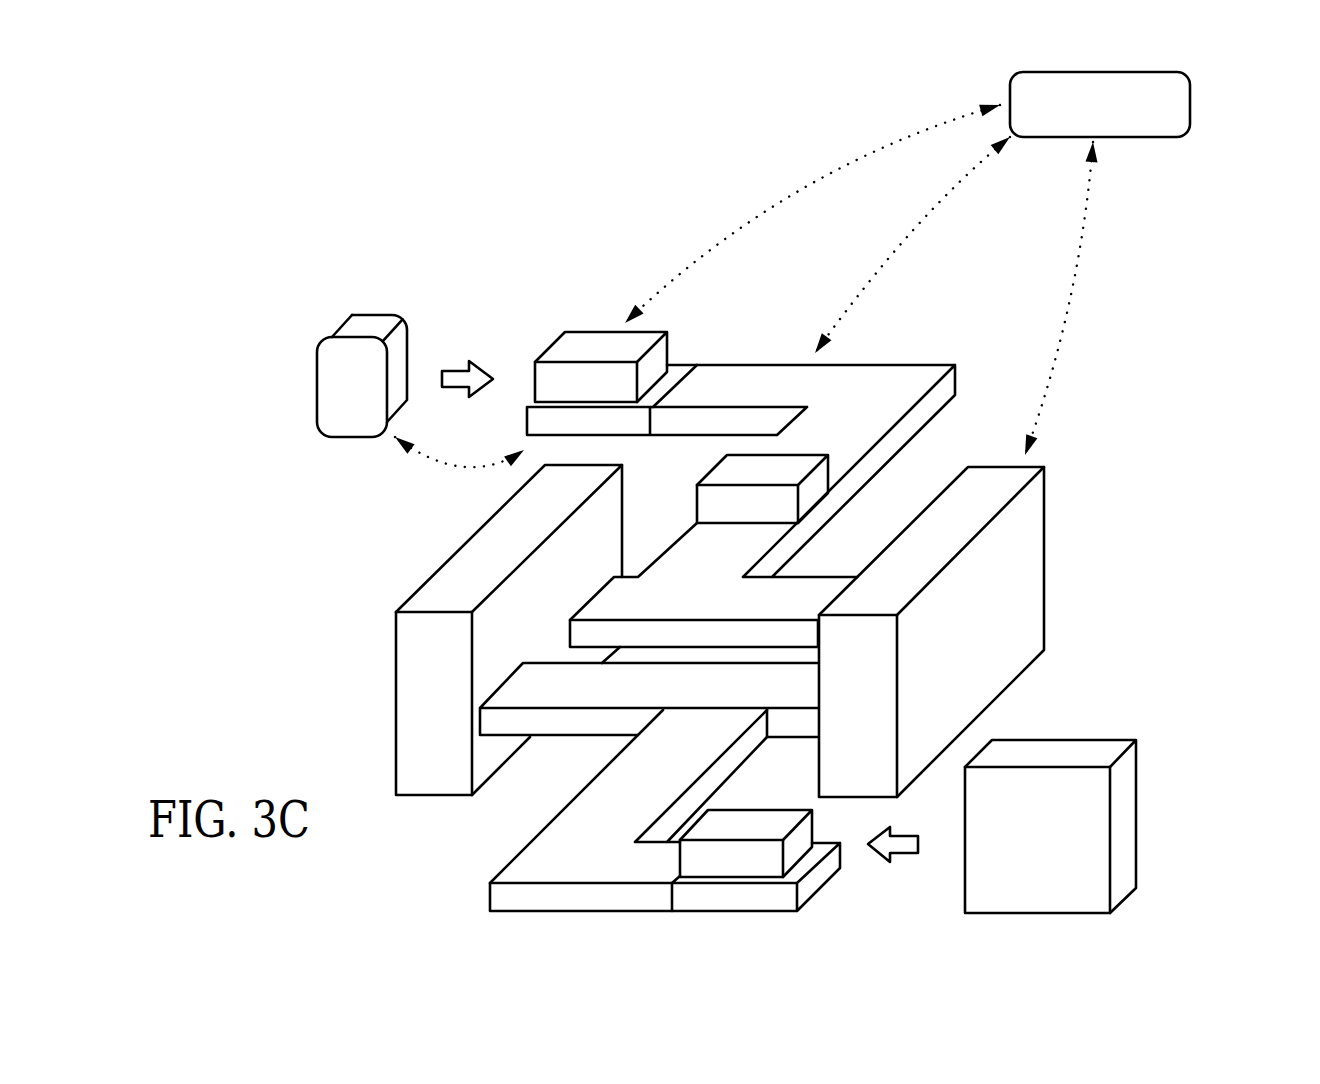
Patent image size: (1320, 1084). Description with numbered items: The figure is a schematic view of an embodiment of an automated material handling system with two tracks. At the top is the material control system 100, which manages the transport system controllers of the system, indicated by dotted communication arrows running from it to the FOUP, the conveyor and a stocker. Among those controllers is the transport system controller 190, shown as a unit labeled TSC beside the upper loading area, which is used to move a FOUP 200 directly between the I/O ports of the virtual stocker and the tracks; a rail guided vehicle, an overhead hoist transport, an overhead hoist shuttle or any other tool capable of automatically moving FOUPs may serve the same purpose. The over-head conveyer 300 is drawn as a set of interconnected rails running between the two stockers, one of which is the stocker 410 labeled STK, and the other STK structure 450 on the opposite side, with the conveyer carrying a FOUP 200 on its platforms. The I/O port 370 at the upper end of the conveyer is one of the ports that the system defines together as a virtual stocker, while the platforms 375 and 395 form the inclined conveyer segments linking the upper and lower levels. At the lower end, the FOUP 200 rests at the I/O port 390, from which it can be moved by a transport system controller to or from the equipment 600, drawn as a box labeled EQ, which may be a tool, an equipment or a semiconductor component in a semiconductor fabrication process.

The material control system 100 is at (1192, 97).
The transport system controller 190 is at (316, 386).
The FOUP 200 is at (589, 332).
The over-head conveyer 300 is at (825, 576).
The I/O port 370 is at (683, 365).
The conveyor platform 375 is at (910, 364).
The I/O port 390 is at (815, 880).
The conveyor platform 395 is at (540, 834).
The stocker (STK) 410 is at (1047, 553).
The stocker (STK) 450 is at (395, 704).
The equipment 600 is at (1124, 813).